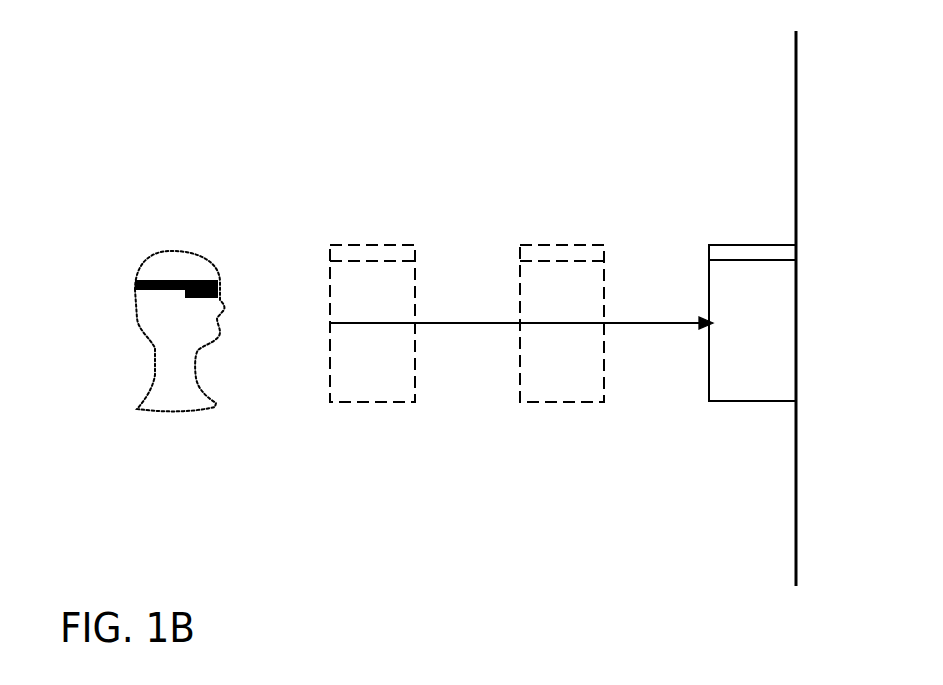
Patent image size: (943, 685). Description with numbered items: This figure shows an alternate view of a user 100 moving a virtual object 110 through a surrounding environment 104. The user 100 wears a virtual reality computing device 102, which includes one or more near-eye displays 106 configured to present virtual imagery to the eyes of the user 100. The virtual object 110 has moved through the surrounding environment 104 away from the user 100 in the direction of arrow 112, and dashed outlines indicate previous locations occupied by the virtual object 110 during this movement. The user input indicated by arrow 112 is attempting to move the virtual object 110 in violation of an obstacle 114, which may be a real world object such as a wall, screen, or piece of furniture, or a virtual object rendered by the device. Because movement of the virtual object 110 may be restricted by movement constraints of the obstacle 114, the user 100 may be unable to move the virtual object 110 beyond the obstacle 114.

The user 100 is at (165, 327).
The virtual reality computing device 102 is at (171, 266).
The surrounding environment 104 is at (159, 156).
The near-eye display 106 is at (218, 290).
The virtual object 110 is at (731, 245).
The arrow 112 is at (484, 321).
The obstacle 114 is at (795, 154).